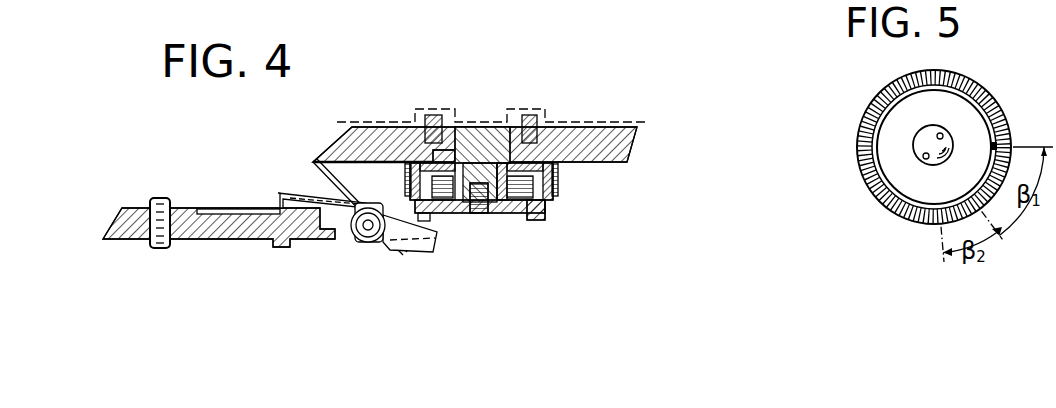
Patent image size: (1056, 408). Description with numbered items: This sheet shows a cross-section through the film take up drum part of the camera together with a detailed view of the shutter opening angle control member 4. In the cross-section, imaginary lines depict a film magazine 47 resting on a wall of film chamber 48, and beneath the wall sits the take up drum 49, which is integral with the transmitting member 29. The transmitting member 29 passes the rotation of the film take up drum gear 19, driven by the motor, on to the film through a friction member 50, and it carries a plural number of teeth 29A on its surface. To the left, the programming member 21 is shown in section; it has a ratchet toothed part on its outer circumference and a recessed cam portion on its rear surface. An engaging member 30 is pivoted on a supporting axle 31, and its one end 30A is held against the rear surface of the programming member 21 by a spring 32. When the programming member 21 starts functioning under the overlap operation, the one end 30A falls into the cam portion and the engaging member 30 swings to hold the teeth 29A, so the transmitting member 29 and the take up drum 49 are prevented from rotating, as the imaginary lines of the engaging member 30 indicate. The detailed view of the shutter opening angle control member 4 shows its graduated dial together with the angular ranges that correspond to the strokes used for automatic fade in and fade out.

In FIG. 4, the programming member 21 is at (230, 242).
In FIG. 4, the one end of the member 30A is at (277, 207).
In FIG. 4, the wall of film chamber 48 is at (592, 137).
In FIG. 4, the take up drum 49 is at (500, 137).
In FIG. 4, the film magazine 47 is at (468, 122).
In FIG. 4, the friction member 50 is at (533, 192).
In FIG. 4, the film take up drum gear 19 is at (557, 180).
In FIG. 4, the transmitting member 29 is at (510, 213).
In FIG. 4, the teeth 29A is at (536, 220).
In FIG. 4, the spring 32 is at (390, 255).
In FIG. 4, the engaging member 30 is at (437, 250).
In FIG. 4, the supporting axle 31 is at (360, 243).
In FIG. 5, the shutter opening angle control member 4 is at (983, 93).